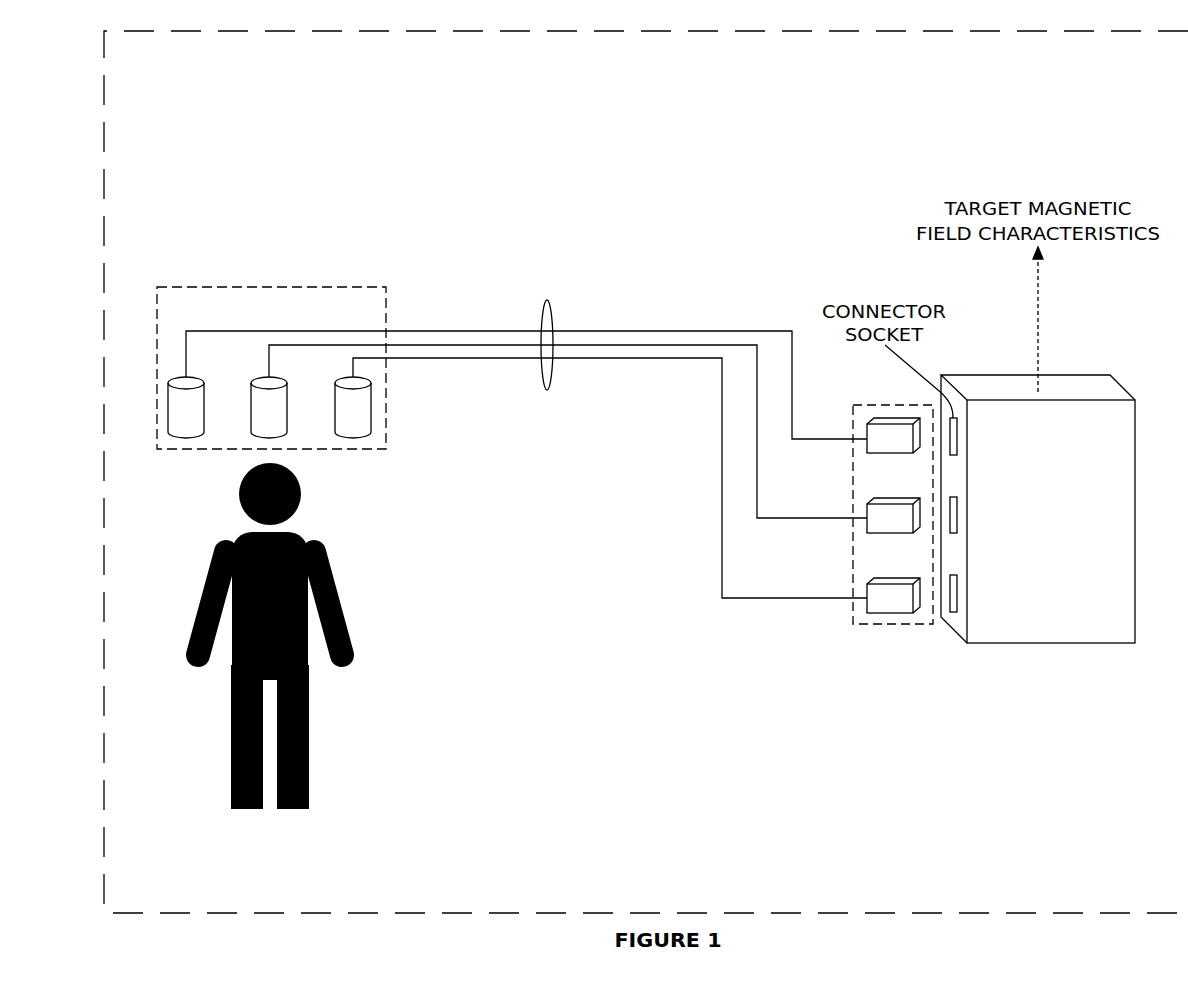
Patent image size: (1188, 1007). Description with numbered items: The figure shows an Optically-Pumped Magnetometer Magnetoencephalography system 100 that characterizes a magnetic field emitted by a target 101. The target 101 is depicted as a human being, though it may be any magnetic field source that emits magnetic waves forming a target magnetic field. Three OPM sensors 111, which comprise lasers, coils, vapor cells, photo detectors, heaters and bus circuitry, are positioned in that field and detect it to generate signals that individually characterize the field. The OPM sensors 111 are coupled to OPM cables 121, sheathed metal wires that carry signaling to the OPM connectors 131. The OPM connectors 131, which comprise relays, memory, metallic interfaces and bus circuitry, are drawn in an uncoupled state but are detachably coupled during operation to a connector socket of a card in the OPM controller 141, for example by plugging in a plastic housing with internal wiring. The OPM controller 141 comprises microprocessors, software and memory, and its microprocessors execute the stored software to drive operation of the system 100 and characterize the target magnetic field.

The Optically-Pumped Magnetometer Magnetoencephalography (OPM MEG) system 100 is at (210, 59).
The target 101 is at (270, 636).
The OPM sensors 111 is at (180, 314).
The OPM cables 121 is at (547, 300).
The OPM connectors 131 is at (893, 624).
The OPM controller 141 is at (1038, 509).